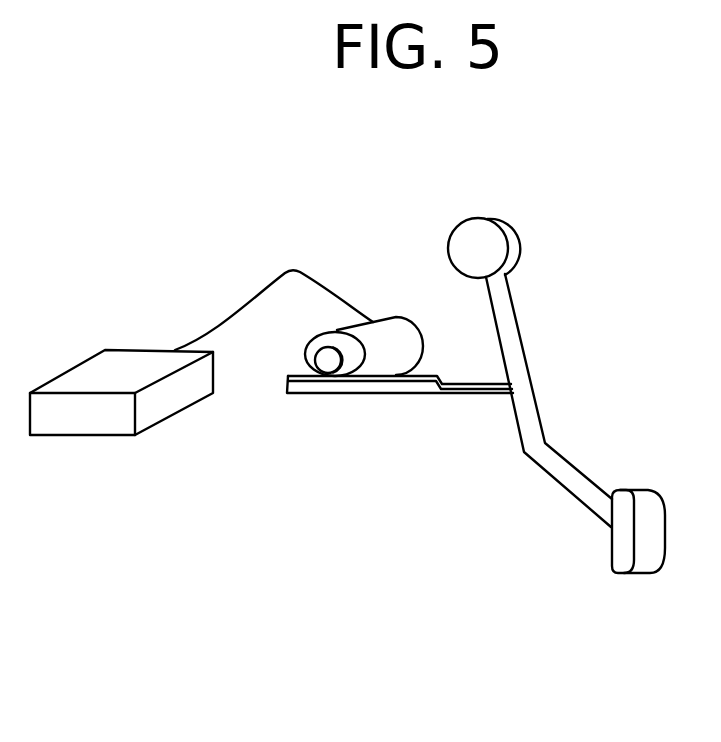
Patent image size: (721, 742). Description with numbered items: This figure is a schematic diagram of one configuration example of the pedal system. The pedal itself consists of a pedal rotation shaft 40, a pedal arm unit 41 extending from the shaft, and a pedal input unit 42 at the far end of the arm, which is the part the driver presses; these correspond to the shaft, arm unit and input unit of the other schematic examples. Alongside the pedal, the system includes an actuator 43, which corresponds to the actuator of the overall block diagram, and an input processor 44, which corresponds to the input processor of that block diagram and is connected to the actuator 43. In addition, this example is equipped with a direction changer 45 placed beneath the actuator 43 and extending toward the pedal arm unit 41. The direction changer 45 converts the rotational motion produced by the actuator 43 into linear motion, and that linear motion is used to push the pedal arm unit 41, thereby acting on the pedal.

The pedal rotation shaft 40 is at (478, 243).
The pedal arm unit 41 is at (555, 470).
The pedal input unit 42 is at (645, 562).
The actuator 43 is at (385, 333).
The input processor 44 is at (135, 368).
The direction changer 45 is at (392, 385).